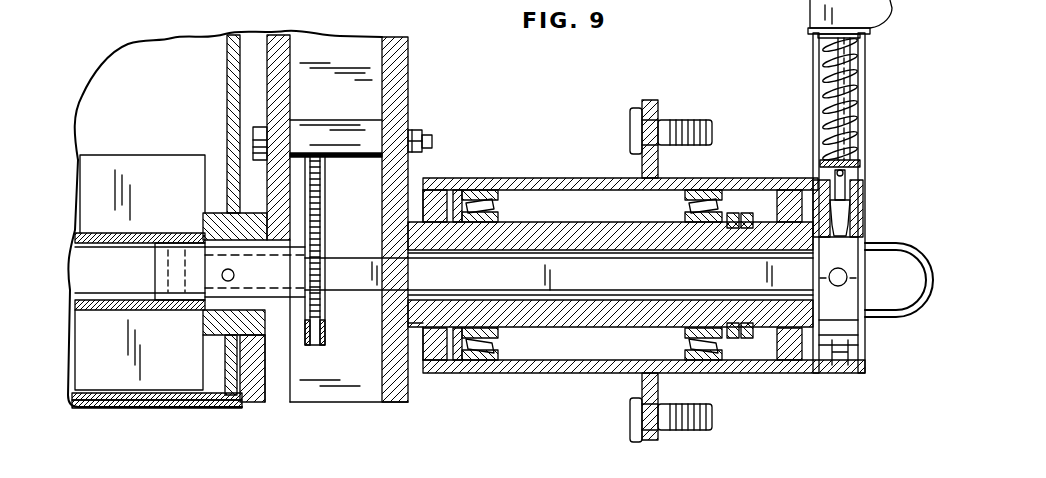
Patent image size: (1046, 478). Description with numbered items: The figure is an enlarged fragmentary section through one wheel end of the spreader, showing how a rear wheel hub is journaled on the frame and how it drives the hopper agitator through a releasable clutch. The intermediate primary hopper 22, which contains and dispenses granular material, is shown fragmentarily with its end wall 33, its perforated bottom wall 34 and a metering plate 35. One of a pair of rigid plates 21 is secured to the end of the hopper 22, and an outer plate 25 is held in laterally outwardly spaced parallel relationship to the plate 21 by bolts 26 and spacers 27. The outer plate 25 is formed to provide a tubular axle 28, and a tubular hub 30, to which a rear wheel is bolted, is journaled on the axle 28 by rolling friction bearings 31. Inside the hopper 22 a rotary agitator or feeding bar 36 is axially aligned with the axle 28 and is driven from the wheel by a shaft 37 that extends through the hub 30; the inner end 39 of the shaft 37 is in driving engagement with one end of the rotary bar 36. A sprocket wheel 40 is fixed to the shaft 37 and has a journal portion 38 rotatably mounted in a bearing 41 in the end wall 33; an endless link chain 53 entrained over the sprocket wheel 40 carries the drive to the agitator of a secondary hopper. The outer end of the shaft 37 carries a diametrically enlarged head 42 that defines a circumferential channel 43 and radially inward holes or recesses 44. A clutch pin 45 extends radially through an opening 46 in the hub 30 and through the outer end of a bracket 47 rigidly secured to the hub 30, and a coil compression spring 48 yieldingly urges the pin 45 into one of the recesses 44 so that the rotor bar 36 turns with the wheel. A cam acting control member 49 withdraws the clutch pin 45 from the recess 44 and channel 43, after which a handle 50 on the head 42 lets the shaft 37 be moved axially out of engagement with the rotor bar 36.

The intermediate primary hopper 22 is at (137, 60).
The rigid plates 21 is at (273, 58).
The end wall 33 is at (230, 77).
The outer plates 25 is at (395, 47).
The spacers 27 is at (350, 100).
The bolts 26 is at (427, 140).
The rolling friction bearings 31 is at (480, 200).
The tubular axles 28 is at (553, 233).
The tubular hubs 30 is at (592, 178).
The shaft 37 is at (497, 284).
The sprocket wheel 40 is at (318, 277).
The endless link chain 53 is at (328, 343).
The bearing 41 is at (233, 227).
The rotary agitator or feeding bar 36 is at (97, 313).
The inner end 39 is at (163, 313).
The journal portion 38 is at (203, 332).
The metering plate 35 is at (100, 408).
The perforated bottom wall 34 is at (180, 400).
The cam acting control member 49 is at (812, 8).
The bracket 47 is at (858, 88).
The coil compression spring 48 is at (860, 100).
The opening 46 is at (862, 180).
The clutch pin 45 is at (862, 200).
The holes or recesses 44 is at (852, 218).
The handle 50 is at (908, 252).
The diametrically enlarged head 42 is at (855, 337).
The circumferential channel 43 is at (840, 352).